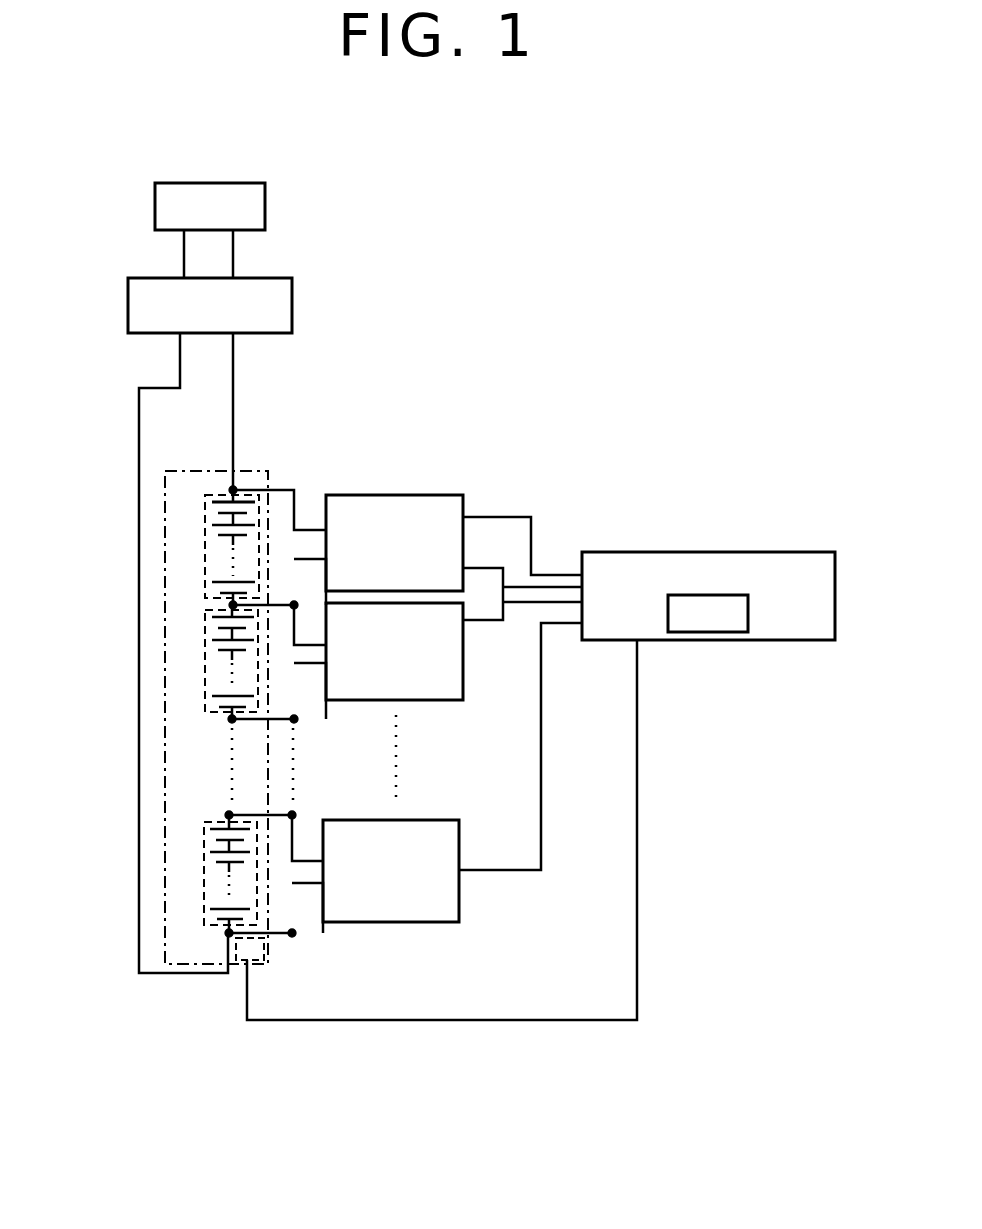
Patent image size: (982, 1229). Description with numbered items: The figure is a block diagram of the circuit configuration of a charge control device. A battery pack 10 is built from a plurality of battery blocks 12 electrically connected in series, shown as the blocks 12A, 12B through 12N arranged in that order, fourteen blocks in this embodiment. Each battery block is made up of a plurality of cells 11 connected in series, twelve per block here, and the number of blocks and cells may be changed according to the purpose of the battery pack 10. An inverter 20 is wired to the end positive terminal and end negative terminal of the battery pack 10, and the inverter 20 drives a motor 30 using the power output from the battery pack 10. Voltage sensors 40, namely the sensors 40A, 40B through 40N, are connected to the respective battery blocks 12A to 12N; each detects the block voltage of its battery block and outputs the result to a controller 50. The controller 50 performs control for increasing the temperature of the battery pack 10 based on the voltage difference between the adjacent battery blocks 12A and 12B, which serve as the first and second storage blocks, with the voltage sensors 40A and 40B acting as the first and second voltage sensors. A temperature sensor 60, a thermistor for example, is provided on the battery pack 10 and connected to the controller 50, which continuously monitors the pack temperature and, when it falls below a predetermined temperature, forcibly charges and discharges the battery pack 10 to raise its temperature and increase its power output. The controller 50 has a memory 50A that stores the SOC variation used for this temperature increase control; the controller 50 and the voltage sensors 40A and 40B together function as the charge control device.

The battery pack 10 is at (162, 777).
The cell 11 is at (222, 512).
The battery block 12 is at (146, 712).
The battery block 12A is at (215, 552).
The battery block 12B is at (212, 673).
The battery block 12N is at (203, 892).
The inverter 20 is at (292, 303).
The motor 30 is at (265, 206).
The voltage sensor 40 is at (423, 777).
The voltage sensor 40A is at (423, 495).
The voltage sensor 40B is at (450, 670).
The voltage sensor 40N is at (447, 888).
The controller 50 is at (700, 552).
The memory 50A is at (713, 632).
The temperature sensor 60 is at (258, 948).